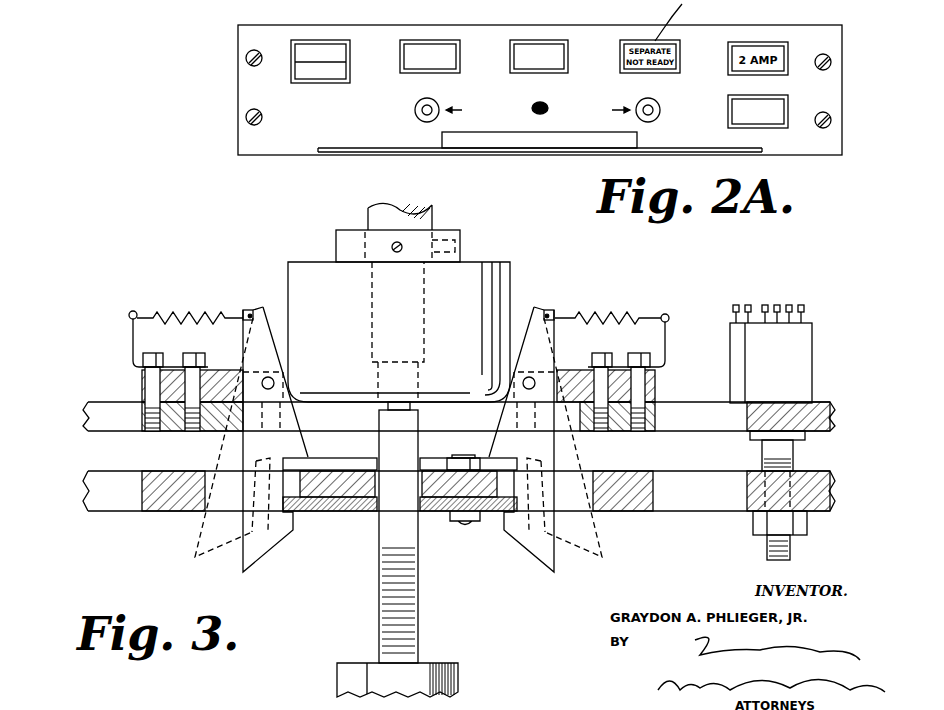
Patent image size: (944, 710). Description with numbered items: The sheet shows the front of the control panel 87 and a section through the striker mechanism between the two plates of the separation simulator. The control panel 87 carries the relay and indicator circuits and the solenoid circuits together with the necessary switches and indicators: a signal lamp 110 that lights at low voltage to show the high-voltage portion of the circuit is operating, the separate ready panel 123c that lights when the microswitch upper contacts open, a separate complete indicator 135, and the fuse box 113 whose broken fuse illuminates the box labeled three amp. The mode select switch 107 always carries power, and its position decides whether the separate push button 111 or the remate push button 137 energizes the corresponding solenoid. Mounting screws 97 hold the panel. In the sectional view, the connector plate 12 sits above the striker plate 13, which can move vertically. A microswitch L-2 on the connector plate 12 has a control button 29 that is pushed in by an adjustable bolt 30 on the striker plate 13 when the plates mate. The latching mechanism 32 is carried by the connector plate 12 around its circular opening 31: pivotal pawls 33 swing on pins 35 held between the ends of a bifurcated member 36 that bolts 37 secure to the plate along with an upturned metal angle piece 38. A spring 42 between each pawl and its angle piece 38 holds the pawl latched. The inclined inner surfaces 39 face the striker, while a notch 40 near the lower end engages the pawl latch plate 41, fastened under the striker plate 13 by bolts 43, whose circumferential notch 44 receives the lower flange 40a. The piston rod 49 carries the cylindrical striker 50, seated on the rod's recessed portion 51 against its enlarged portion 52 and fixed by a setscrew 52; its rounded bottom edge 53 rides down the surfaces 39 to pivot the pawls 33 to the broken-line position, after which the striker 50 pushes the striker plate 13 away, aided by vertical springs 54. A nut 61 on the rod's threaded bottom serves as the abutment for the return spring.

In FIG. 2A, the control panel 87 is at (820, 86).
In FIG. 2A, the panel mounting screws 97 is at (322, 40).
In FIG. 2A, the signal lamp 110 is at (324, 83).
In FIG. 2A, the vertical springs 54 is at (382, 2).
In FIG. 2A, the separate ready panel 123c is at (453, 40).
In FIG. 2A, the separate complete indicator 135 is at (567, 42).
In FIG. 2A, the fuse box 113 is at (786, 128).
In FIG. 2A, the separate push button 111 is at (424, 120).
In FIG. 2A, the remate push button 137 is at (655, 120).
In FIG. 2A, the mode select switch 107 is at (548, 106).
In FIG. 3, the connector plate 12 is at (100, 400).
In FIG. 3, the striker plate 13 is at (130, 513).
In FIG. 3, the control button 29 is at (800, 446).
In FIG. 3, the adjustable bolt 30 is at (790, 548).
In FIG. 3, the circular opening 31 is at (430, 424).
In FIG. 3, the latching mechanism 32 is at (207, 282).
In FIG. 3, the pivotal pawls 33 is at (254, 308).
In FIG. 3, the pins 35 is at (272, 380).
In FIG. 3, the bifurcated member 36 is at (236, 386).
In FIG. 3, the bolts 37 is at (196, 352).
In FIG. 3, the upturned metal angle piece 38 is at (131, 338).
In FIG. 3, the inner surfaces 39 is at (289, 310).
In FIG. 3, the notch 40 is at (296, 461).
In FIG. 3, the lower flange 40a is at (292, 532).
In FIG. 3, the pawl latch plate 41 is at (336, 500).
In FIG. 3, the spring 42 is at (170, 316).
In FIG. 3, the bolts 43 is at (472, 524).
In FIG. 3, the circumferential notch 44 is at (296, 514).
In FIG. 3, the piston rod 49 is at (432, 215).
In FIG. 3, the striker 50 is at (470, 275).
In FIG. 3, the recessed portion 51 is at (422, 384).
In FIG. 3, the enlarged portion 52 is at (402, 246).
In FIG. 3, the bottom edge 53 is at (298, 396).
In FIG. 3, the nut 61 is at (440, 668).
In FIG. 3, the microswitch L-2 is at (812, 340).